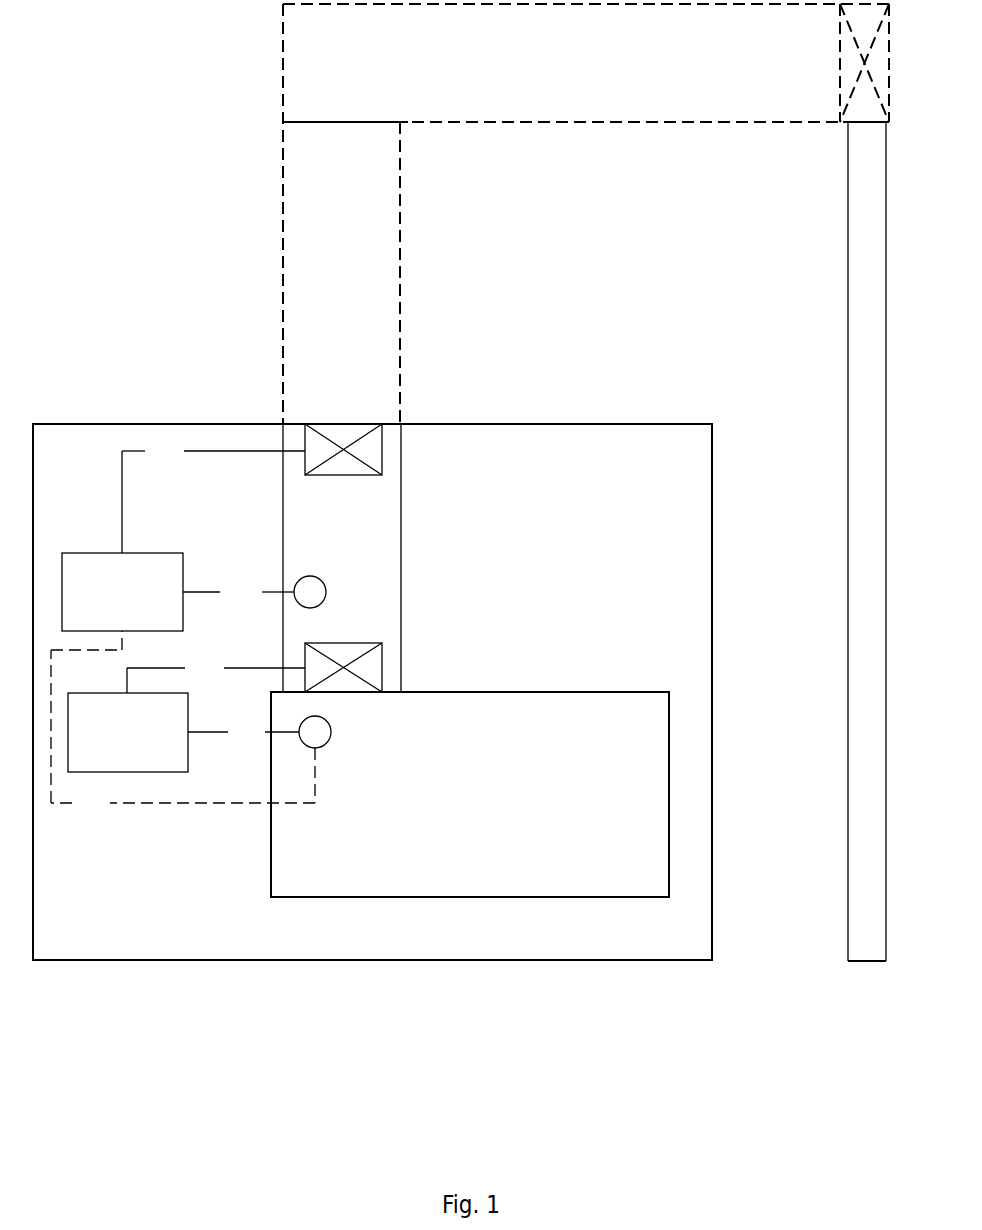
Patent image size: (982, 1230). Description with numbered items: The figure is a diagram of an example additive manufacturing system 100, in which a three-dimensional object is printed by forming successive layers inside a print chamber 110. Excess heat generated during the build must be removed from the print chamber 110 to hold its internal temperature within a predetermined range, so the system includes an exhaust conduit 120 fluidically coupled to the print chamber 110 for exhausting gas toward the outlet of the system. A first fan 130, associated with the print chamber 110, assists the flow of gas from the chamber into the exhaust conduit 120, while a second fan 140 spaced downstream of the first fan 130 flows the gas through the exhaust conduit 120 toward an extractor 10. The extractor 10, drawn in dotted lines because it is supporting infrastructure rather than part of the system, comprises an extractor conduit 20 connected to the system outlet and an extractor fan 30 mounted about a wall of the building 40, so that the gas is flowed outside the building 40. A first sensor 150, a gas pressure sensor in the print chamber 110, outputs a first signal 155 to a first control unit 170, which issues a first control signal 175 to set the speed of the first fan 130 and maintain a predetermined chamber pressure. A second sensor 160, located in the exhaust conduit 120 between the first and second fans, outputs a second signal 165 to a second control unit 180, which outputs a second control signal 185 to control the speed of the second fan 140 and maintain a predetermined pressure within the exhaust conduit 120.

The extractor 10 is at (547, 210).
The extractor conduit 20 is at (493, 122).
The extractor fan 30 is at (840, 122).
The building 40 is at (848, 294).
The additive manufacturing system 100 is at (372, 692).
The print chamber 110 is at (470, 794).
The exhaust conduit 120 is at (402, 614).
The first fan 130 is at (352, 642).
The second fan 140 is at (360, 475).
The first sensor 150 is at (333, 736).
The first signal 155 is at (183, 724).
The second sensor 160 is at (308, 575).
The second signal 165 is at (238, 592).
The first control unit 170 is at (128, 732).
The first control signal 175 is at (216, 673).
The second control unit 180 is at (122, 592).
The second control signal 185 is at (213, 495).